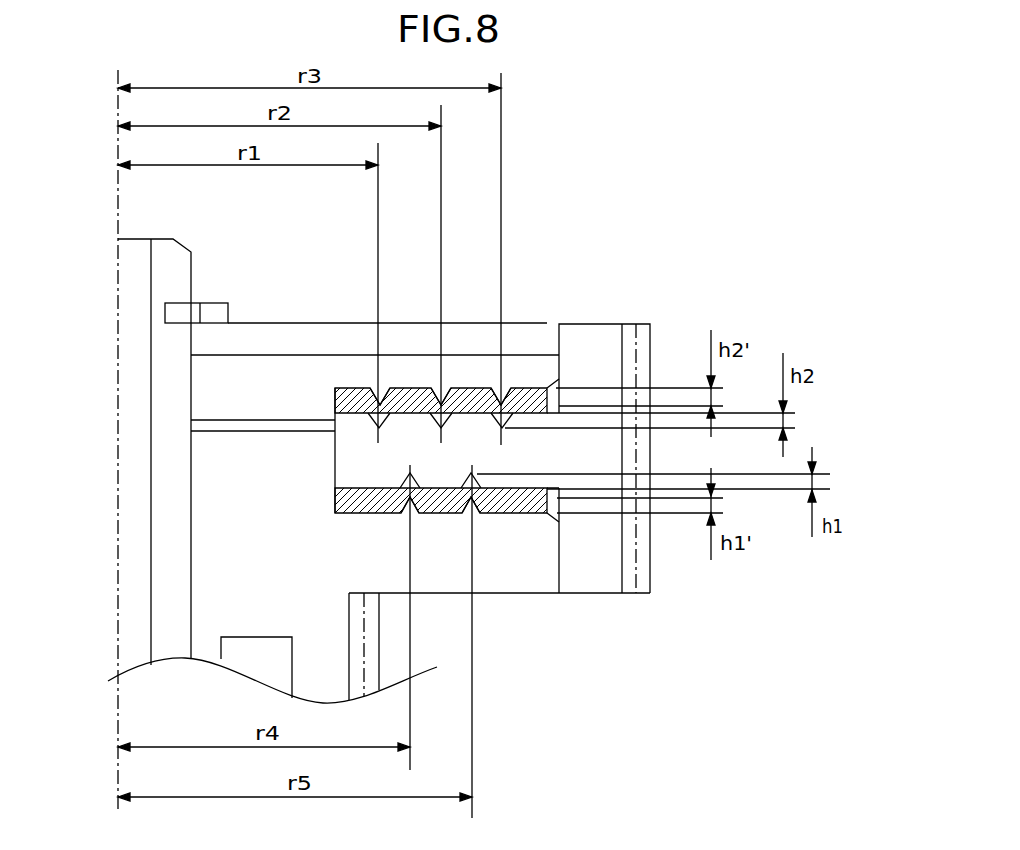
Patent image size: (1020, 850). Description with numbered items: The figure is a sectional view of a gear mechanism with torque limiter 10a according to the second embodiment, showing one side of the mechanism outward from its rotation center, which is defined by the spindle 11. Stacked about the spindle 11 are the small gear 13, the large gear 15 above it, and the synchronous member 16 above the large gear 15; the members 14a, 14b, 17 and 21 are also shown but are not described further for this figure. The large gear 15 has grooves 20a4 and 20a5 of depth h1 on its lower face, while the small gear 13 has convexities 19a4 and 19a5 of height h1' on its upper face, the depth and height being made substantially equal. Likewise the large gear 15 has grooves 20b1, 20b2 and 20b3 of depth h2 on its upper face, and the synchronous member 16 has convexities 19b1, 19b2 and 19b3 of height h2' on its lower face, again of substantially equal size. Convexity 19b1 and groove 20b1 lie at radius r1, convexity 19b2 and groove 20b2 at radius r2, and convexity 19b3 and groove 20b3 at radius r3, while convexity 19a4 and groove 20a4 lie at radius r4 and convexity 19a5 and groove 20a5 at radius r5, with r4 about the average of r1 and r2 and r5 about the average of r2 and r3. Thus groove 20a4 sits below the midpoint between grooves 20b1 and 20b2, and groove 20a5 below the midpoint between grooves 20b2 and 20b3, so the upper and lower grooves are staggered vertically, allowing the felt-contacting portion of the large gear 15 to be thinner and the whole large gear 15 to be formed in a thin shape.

The gear mechanism with torque limiter 10a is at (83, 351).
The spindle 11 is at (172, 239).
The small gear 13 is at (372, 648).
The first magnetic ring 14a is at (347, 517).
The second magnetic ring 14b is at (335, 397).
The large gear 15 is at (607, 593).
The synchronous member 16 is at (546, 330).
The sensor plate 17 is at (265, 323).
The convexity of small gear 19a4 is at (404, 515).
The convexity of small gear 19a5 is at (477, 515).
The convexity of synchronous member 19b1 is at (375, 387).
The convexity of synchronous member 19b2 is at (437, 387).
The convexity of synchronous member 19b3 is at (500, 386).
The groove of large gear 20a4 is at (403, 486).
The groove of large gear 20a5 is at (480, 480).
The groove of large gear 20b1 is at (372, 418).
The groove of large gear 20b2 is at (436, 417).
The groove of large gear 20b3 is at (497, 417).
The sensor 21 is at (219, 303).